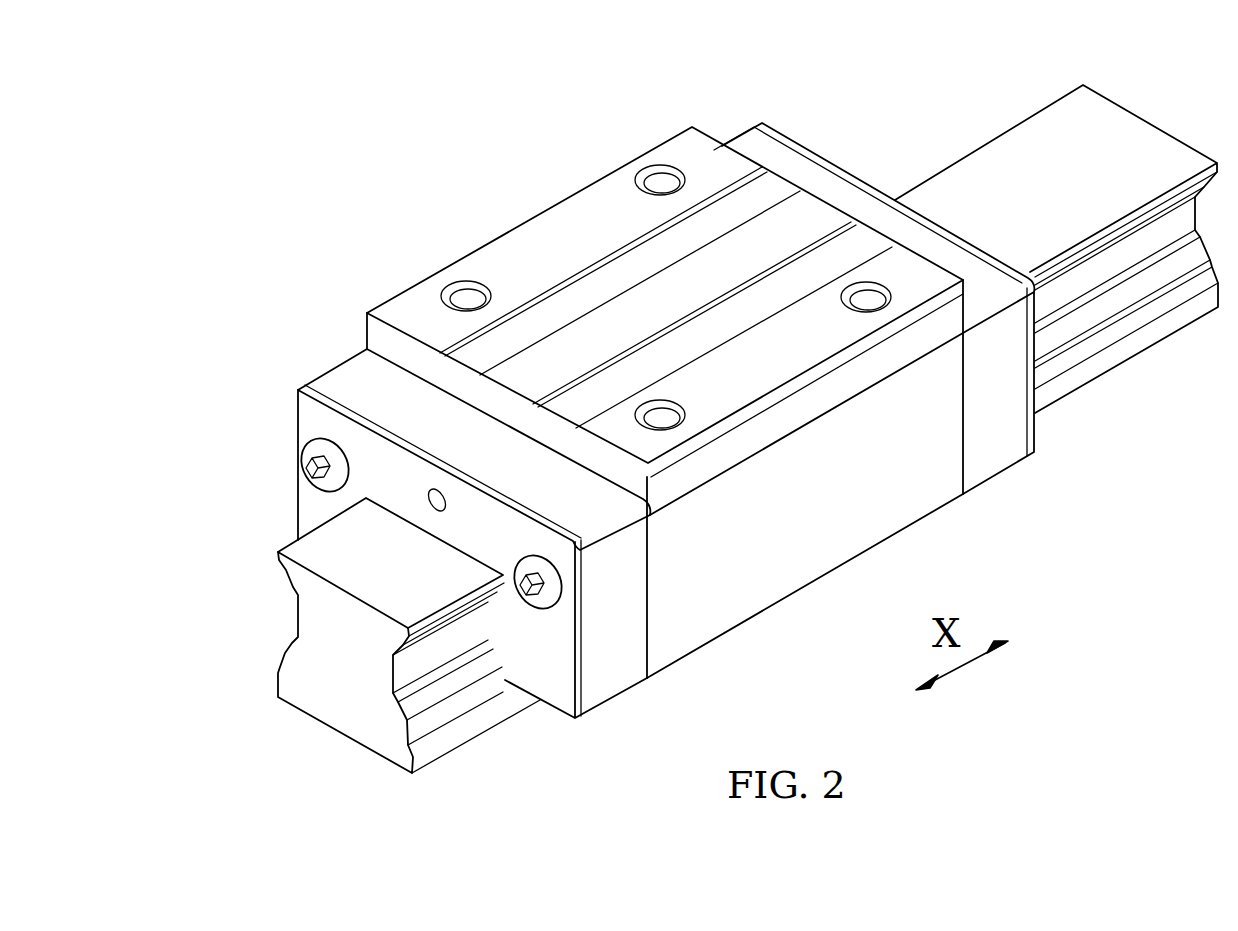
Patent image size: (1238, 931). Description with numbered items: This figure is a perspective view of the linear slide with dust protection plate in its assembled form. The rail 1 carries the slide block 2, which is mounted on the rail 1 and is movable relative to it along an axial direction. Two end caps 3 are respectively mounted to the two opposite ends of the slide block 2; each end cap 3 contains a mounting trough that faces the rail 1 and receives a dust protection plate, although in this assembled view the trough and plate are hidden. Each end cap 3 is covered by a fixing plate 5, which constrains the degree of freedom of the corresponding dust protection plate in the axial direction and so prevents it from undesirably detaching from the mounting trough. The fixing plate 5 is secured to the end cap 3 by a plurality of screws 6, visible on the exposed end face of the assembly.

The rail 1 is at (357, 690).
The slide block 2 is at (520, 243).
The end cap 3 is at (748, 147).
The fixing plate 5 is at (810, 143).
The screw 6 is at (313, 460).